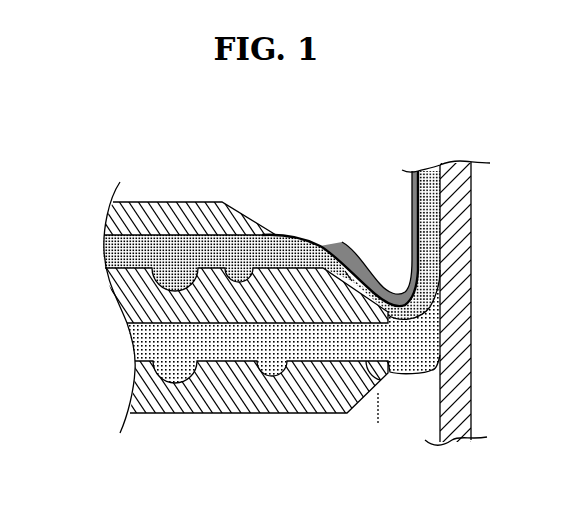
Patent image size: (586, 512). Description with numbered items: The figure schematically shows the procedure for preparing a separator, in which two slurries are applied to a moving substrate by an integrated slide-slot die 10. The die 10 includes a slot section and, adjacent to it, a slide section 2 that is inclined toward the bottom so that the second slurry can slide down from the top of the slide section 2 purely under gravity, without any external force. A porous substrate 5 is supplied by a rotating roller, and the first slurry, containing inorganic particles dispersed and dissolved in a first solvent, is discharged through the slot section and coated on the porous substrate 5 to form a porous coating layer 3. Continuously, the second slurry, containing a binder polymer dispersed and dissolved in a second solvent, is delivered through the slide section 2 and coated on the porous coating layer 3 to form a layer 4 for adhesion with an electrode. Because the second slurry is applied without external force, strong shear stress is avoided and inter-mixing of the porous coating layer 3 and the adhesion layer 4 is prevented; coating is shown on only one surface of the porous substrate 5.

The integrated slide-slot die 10 is at (76, 287).
The slide section 2 is at (349, 270).
The porous coating layer 3 is at (430, 170).
The layer for adhesion with an electrode 4 is at (417, 169).
The porous substrate 5 is at (462, 162).